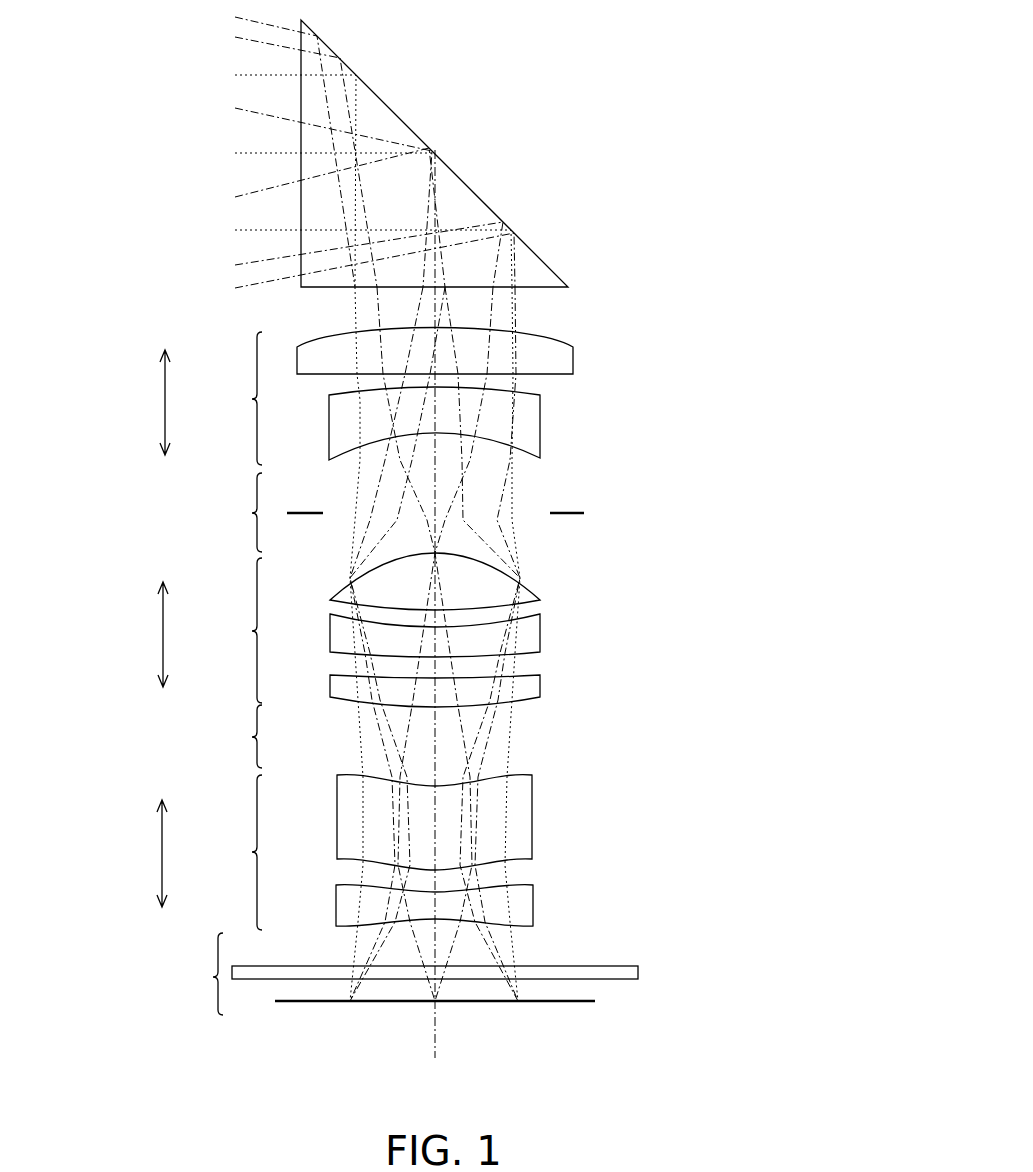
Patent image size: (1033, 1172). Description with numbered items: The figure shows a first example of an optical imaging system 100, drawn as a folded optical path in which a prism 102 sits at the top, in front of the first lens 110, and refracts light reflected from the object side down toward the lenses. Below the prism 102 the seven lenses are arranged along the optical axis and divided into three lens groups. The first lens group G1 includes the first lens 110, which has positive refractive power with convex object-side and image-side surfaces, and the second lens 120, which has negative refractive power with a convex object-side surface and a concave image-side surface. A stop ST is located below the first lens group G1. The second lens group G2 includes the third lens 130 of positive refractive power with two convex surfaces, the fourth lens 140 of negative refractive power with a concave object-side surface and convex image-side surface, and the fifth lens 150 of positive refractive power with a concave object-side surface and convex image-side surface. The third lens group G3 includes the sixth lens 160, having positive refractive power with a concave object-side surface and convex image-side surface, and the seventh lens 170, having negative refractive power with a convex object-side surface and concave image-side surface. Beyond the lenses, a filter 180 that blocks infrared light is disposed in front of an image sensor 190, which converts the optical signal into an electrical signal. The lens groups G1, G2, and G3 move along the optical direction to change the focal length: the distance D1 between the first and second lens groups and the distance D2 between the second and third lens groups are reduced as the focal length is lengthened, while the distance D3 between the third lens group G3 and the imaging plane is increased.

The optical imaging system 100 is at (528, 105).
The prism 102 is at (547, 255).
The first lens 110 is at (573, 363).
The second lens 120 is at (540, 429).
The third lens 130 is at (535, 585).
The fourth lens 140 is at (538, 630).
The fifth lens 150 is at (538, 685).
The sixth lens 160 is at (532, 820).
The seventh lens 170 is at (532, 905).
The filter 180 is at (639, 973).
The image sensor 190 is at (595, 1003).
The stop ST is at (584, 513).
The first lens group G1 is at (211, 398).
The second lens group G2 is at (210, 630).
The third lens group G3 is at (209, 852).
The distance between the first lens group and the second lens group D1 is at (240, 512).
The distance between the second lens group and the third lens group D2 is at (238, 736).
The distance between the third lens group and the imaging plane D3 is at (201, 974).